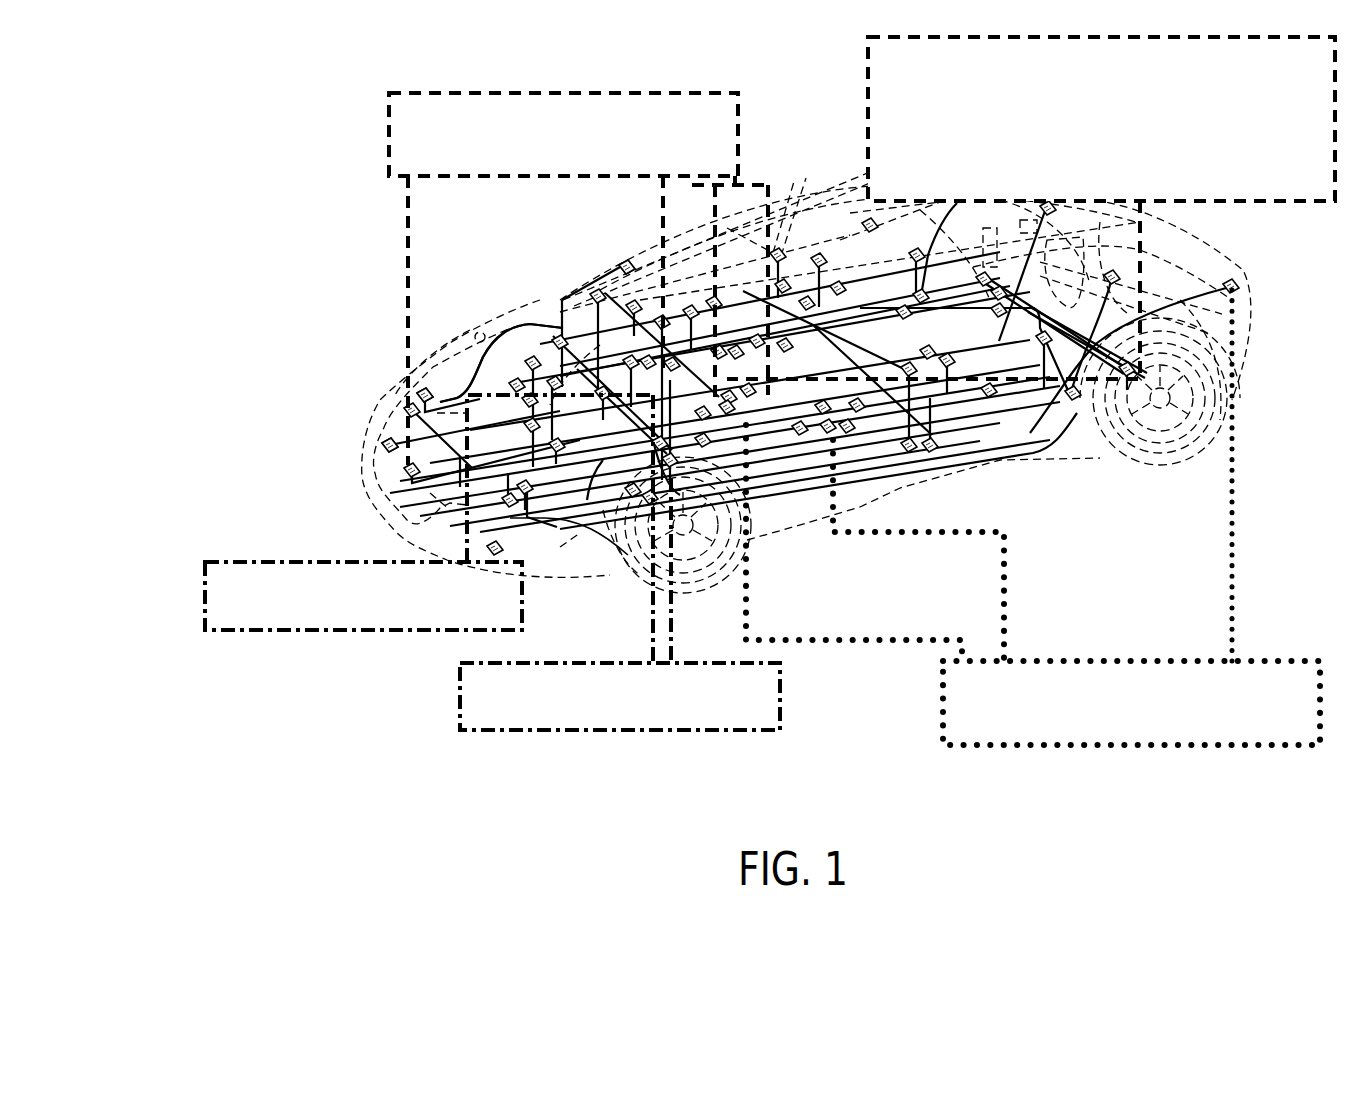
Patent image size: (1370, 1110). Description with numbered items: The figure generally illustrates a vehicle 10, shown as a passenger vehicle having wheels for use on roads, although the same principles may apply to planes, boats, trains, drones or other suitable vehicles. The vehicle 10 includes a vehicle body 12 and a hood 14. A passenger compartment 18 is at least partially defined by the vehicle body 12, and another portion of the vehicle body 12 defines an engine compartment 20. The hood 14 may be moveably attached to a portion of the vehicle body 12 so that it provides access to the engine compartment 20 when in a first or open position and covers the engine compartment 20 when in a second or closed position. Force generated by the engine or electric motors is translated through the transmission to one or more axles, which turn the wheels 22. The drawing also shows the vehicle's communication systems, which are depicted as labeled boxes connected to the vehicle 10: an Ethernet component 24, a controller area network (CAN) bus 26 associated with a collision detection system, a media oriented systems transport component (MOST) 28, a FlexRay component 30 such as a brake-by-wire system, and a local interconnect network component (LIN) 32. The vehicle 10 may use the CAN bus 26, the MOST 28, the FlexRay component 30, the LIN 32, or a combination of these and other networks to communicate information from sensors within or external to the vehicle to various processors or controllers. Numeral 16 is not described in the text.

The vehicle 10 is at (178, 186).
The vehicle body 12 is at (772, 322).
The hood 14 is at (505, 324).
The collision detection system 16 is at (588, 320).
The passenger compartment 18 is at (680, 268).
The engine compartment 20 is at (330, 404).
The wheels 22 is at (615, 545).
The Ethernet component 24 is at (168, 602).
The controller area network (CAN) bus 26 is at (362, 134).
The media oriented systems transport component (MOST) 28 is at (838, 102).
The FlexRay component 30 is at (420, 697).
The local interconnect network component (LIN) 32 is at (918, 698).